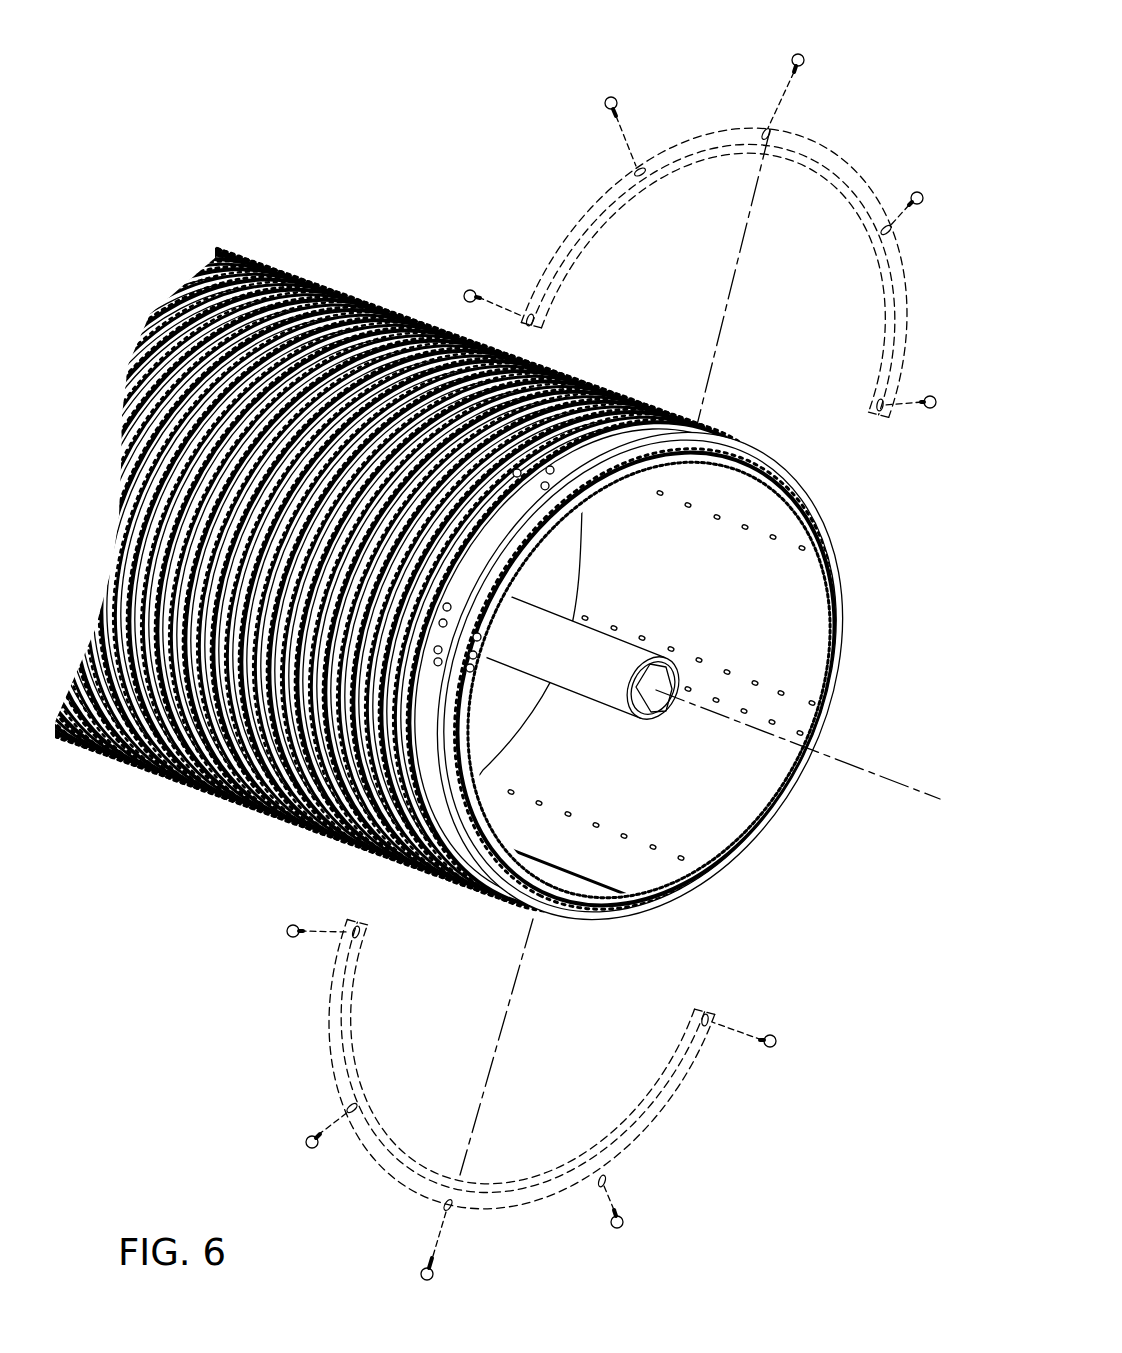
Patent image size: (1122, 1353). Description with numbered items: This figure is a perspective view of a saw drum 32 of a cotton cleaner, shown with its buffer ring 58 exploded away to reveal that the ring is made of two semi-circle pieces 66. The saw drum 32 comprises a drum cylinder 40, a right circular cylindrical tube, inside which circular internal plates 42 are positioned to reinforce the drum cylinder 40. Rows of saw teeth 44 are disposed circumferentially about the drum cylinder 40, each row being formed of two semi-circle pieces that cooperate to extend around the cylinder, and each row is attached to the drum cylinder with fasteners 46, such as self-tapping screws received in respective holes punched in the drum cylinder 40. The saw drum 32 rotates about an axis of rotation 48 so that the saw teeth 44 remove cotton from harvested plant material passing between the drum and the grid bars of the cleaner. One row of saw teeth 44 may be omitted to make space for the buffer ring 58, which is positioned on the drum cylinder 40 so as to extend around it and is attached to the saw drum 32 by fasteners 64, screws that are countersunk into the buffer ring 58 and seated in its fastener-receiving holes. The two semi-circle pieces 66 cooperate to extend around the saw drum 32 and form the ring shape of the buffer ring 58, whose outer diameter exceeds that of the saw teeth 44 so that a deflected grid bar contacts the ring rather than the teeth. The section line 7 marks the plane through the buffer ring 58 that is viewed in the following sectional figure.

The cutting drum assembly 32 is at (470, 559).
The end plate 40 is at (735, 806).
The drum shell 42 is at (559, 559).
The toothed cutting disc 44 is at (547, 390).
The shaft 46 is at (503, 640).
The hub 48 is at (765, 731).
The retaining ring 58 is at (722, 436).
The fastener 64 is at (613, 95).
The ring segment 66 is at (700, 128).
The section line 7 is at (652, 362).